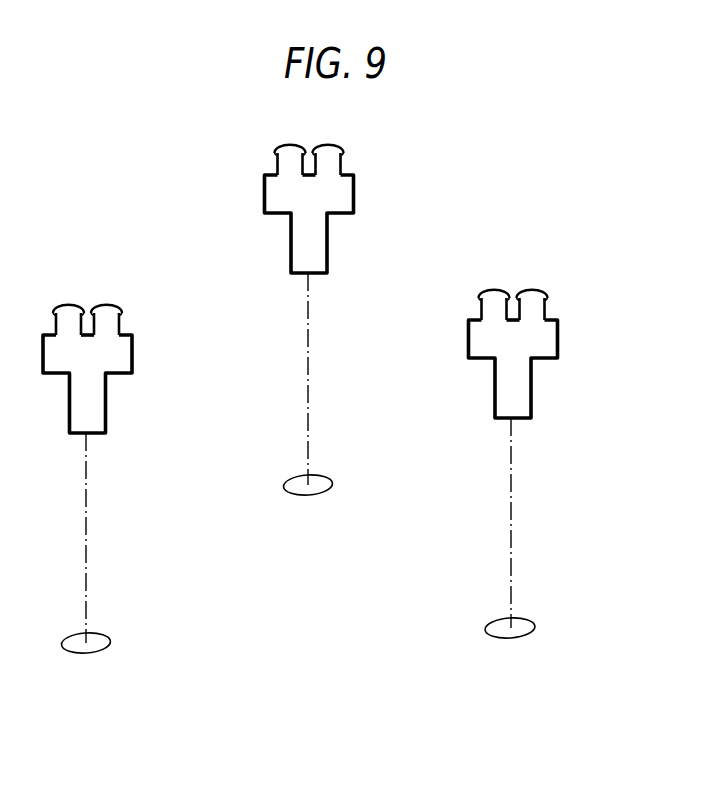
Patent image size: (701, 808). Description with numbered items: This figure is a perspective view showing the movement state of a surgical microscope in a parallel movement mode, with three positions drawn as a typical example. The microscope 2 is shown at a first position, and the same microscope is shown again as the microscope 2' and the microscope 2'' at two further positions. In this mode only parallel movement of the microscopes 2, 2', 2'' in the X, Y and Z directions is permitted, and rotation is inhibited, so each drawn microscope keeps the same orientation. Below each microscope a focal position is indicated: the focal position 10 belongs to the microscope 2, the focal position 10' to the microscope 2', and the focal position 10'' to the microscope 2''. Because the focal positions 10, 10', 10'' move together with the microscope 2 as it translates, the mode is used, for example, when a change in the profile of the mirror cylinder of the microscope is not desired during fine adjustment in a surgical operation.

The microscope 2 is at (333, 209).
The microscope 2' is at (115, 369).
The microscope 2'' is at (544, 354).
The focal position 10 is at (348, 492).
The focal position 10' is at (129, 650).
The focal position 10'' is at (556, 634).